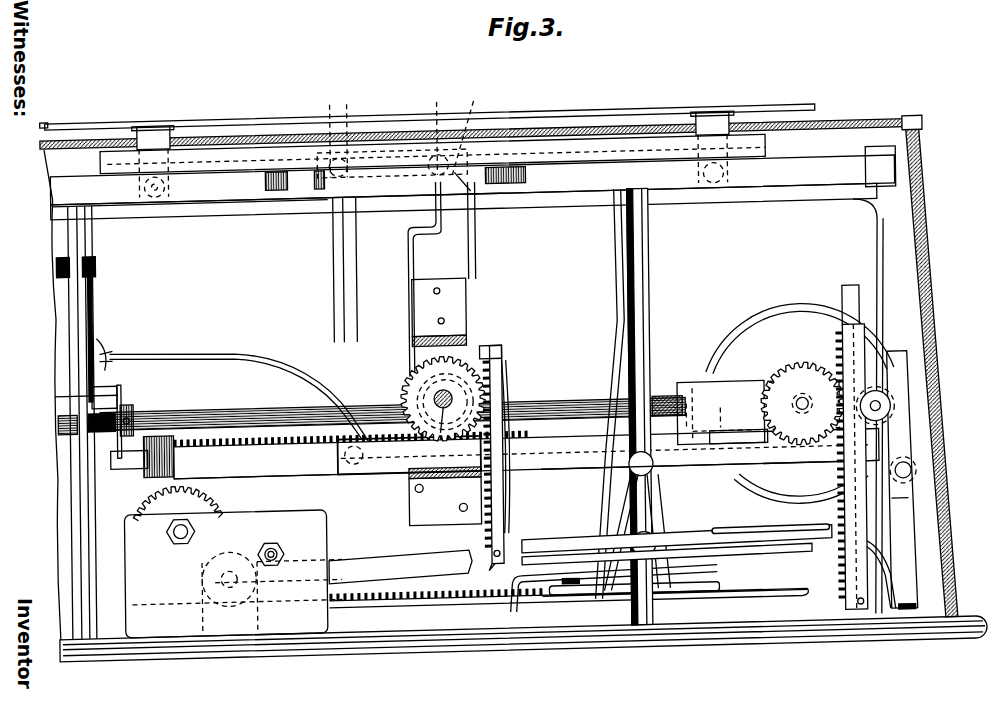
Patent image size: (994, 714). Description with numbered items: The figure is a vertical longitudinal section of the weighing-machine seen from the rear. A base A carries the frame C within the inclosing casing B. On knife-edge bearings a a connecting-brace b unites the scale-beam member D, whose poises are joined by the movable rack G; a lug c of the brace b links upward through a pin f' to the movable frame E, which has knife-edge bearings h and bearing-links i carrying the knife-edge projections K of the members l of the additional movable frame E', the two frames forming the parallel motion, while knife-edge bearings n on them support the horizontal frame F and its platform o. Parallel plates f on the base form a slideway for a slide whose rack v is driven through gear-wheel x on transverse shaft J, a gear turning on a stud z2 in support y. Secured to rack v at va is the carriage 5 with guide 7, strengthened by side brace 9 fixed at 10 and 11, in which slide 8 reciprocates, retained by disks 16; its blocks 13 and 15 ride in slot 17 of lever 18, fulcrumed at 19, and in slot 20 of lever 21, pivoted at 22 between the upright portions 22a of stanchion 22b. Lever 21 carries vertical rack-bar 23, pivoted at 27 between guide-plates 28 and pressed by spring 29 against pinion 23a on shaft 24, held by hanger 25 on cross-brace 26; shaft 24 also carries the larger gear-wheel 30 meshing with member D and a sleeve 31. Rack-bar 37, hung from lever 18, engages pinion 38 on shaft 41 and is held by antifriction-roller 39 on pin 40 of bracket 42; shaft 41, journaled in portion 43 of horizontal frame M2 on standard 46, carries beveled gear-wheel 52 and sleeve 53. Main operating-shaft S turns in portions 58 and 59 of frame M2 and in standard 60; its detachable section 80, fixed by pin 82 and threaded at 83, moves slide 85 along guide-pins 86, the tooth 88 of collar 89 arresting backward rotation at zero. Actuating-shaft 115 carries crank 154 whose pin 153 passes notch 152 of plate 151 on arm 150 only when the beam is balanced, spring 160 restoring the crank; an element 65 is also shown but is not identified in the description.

The platform or table o is at (683, 124).
The knife-edge bearings n is at (158, 202).
The horizontal frame F is at (400, 152).
The pin f' is at (394, 134).
The bearing-links i is at (437, 128).
The knife-edge projections K is at (466, 128).
The movable frame E is at (472, 196).
The additional movable frame E' is at (191, 223).
The knife-edge bearings h is at (880, 192).
The inclosing casing B is at (930, 320).
The base A is at (348, 640).
The standard or upright 60 is at (94, 574).
The actuating-shaft 115 is at (58, 266).
The crank or arm 154 is at (95, 300).
The pin 153 is at (111, 340).
The vertically-disposed plate 151 is at (108, 350).
The notch 152 is at (115, 360).
The arm or member 150 is at (240, 358).
The shaft-section 80 is at (58, 427).
The main operating-shaft S is at (568, 413).
The screw-threaded portion 83 is at (100, 433).
The pin 82 is at (135, 413).
The tooth 88 is at (128, 410).
The slide 85 is at (121, 396).
The collar 89 is at (129, 460).
The guide-pins 86 is at (100, 462).
The spring 160 is at (55, 397).
The movable rack G is at (236, 452).
The scale-beam member D is at (288, 462).
The vertical support y is at (320, 484).
The lugs or offsets c is at (368, 474).
The knife-edge bearings a is at (350, 472).
The connecting-brace b is at (443, 486).
The cross-brace 26 is at (447, 346).
The hanger 25 is at (423, 361).
The bracket 65 is at (415, 256).
The frame or supporting structure C is at (478, 256).
The members l is at (474, 204).
The pinion or gear-wheel 23a is at (470, 402).
The gear-wheel 30 is at (418, 398).
The sleeve 31 is at (412, 385).
The transverse shaft 24 is at (441, 422).
The guide-plates 28 is at (503, 527).
The vertical rack-bar 23 is at (492, 357).
The spring 29 is at (507, 400).
The lever 18 is at (556, 550).
The rack v is at (397, 610).
The fulcrum or pivot 19 is at (233, 573).
The gear-wheel x is at (150, 505).
The transverse shaft J is at (175, 543).
The stud or pin z2 is at (275, 550).
The pivot 27 is at (508, 606).
The securing point 11 is at (577, 601).
The securing point va is at (675, 599).
The carriage 5 is at (644, 312).
The securing points 10 is at (608, 316).
The guide or slideway 7 is at (646, 392).
The lever 21 is at (627, 483).
The slide 8 is at (652, 520).
The disks 16 is at (631, 487).
The side brace 9 is at (612, 438).
The horizontal frame M2 is at (695, 400).
The frame portion 59 is at (690, 420).
The frame portion 58 is at (735, 406).
The frame portion 43 is at (748, 412).
The block 15 is at (709, 454).
The longitudinal slot 20 is at (815, 480).
The beveled gear-wheel 52 is at (790, 327).
The pinion or gear-wheel 38 is at (790, 395).
The transverse shaft 41 is at (808, 421).
The sleeve 53 is at (791, 411).
The standard 46 is at (851, 320).
The rack-bar 37 is at (845, 375).
The upright portions 22a is at (897, 385).
The antifriction-roller 39 is at (874, 412).
The stud or pin 40 is at (880, 426).
The bracket 42 is at (893, 434).
The fulcrum or pivot 22 is at (915, 494).
The stanchion 22b is at (900, 525).
The longitudinal slot 17 is at (740, 552).
The block 13 is at (680, 566).
The parallel plates f is at (827, 605).